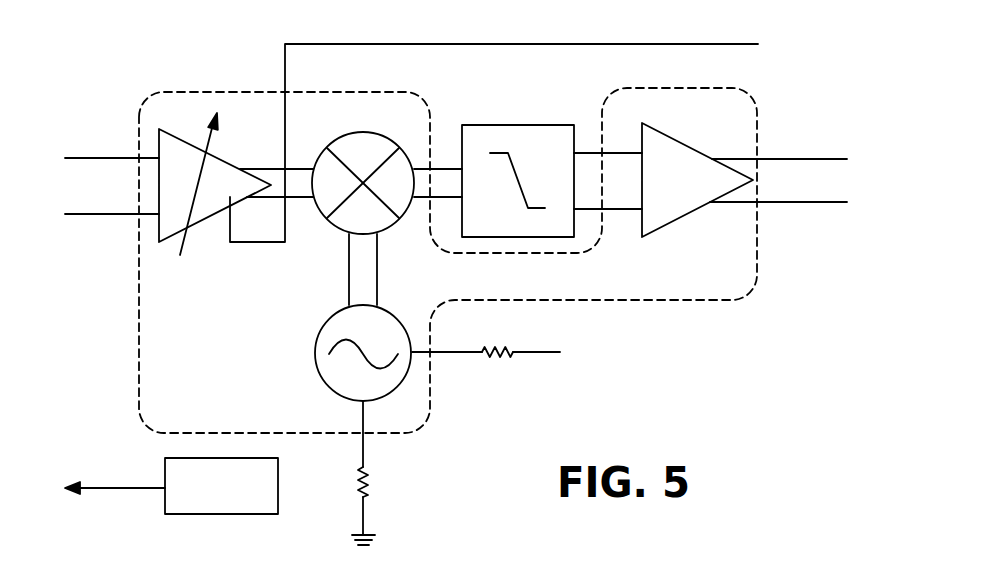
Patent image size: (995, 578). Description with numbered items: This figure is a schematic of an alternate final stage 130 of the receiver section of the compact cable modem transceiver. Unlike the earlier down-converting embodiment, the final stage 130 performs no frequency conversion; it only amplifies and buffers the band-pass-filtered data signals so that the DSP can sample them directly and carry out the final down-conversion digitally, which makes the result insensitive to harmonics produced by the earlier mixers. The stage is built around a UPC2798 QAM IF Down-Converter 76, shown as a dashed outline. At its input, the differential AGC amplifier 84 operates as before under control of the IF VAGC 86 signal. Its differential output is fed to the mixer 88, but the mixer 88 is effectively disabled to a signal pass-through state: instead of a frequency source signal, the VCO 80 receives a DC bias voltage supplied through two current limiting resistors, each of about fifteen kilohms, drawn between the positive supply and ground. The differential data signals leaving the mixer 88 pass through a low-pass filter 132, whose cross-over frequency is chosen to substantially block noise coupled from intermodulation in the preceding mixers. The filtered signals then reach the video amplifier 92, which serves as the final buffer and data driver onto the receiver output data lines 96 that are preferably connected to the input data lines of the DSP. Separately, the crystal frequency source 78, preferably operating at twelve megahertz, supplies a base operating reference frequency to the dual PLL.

The final stage 130 is at (678, 350).
The input differential AGC amplifier 84 is at (229, 160).
The IF VAGC control signal 86 is at (537, 44).
The mixer 88 is at (332, 228).
The VCO 80 is at (315, 347).
The UPC2798 QAM IF Down-Converter 76 is at (528, 193).
The low-pass filter 132 is at (510, 221).
The video amplifier 92 is at (688, 145).
The RX OUT1 and RX OUT2 data lines 96 is at (812, 159).
The frequency source 78 is at (278, 498).